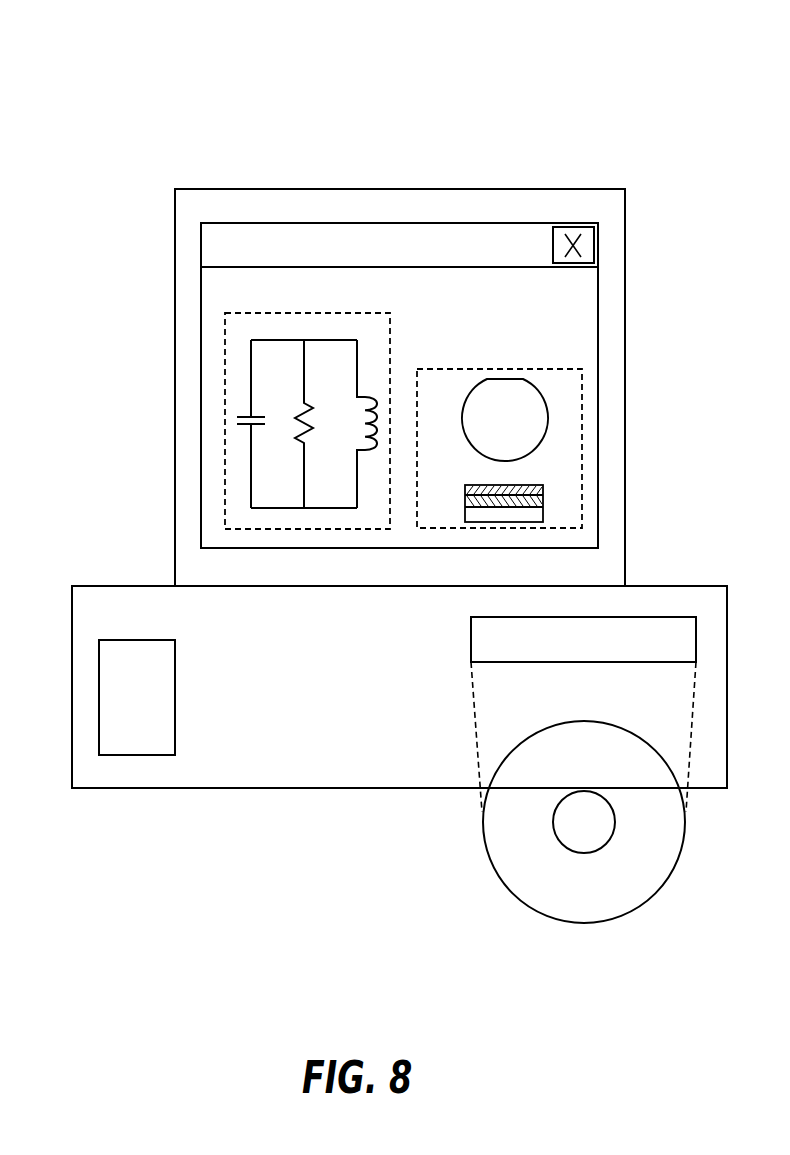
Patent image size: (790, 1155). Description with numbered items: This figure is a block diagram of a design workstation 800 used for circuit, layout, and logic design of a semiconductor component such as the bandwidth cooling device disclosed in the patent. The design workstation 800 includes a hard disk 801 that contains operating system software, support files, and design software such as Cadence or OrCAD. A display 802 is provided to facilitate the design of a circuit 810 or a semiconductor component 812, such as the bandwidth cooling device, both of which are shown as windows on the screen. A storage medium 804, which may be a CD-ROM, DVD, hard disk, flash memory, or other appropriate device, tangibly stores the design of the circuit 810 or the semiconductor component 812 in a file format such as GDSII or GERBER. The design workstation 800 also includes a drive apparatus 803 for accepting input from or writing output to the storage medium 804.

The design workstation 800 is at (80, 71).
The hard disk 801 is at (176, 700).
The display 802 is at (413, 189).
The drive apparatus 803 is at (664, 617).
The storage medium 804 is at (654, 894).
The circuit 810 is at (390, 343).
The semiconductor component 812 is at (510, 369).